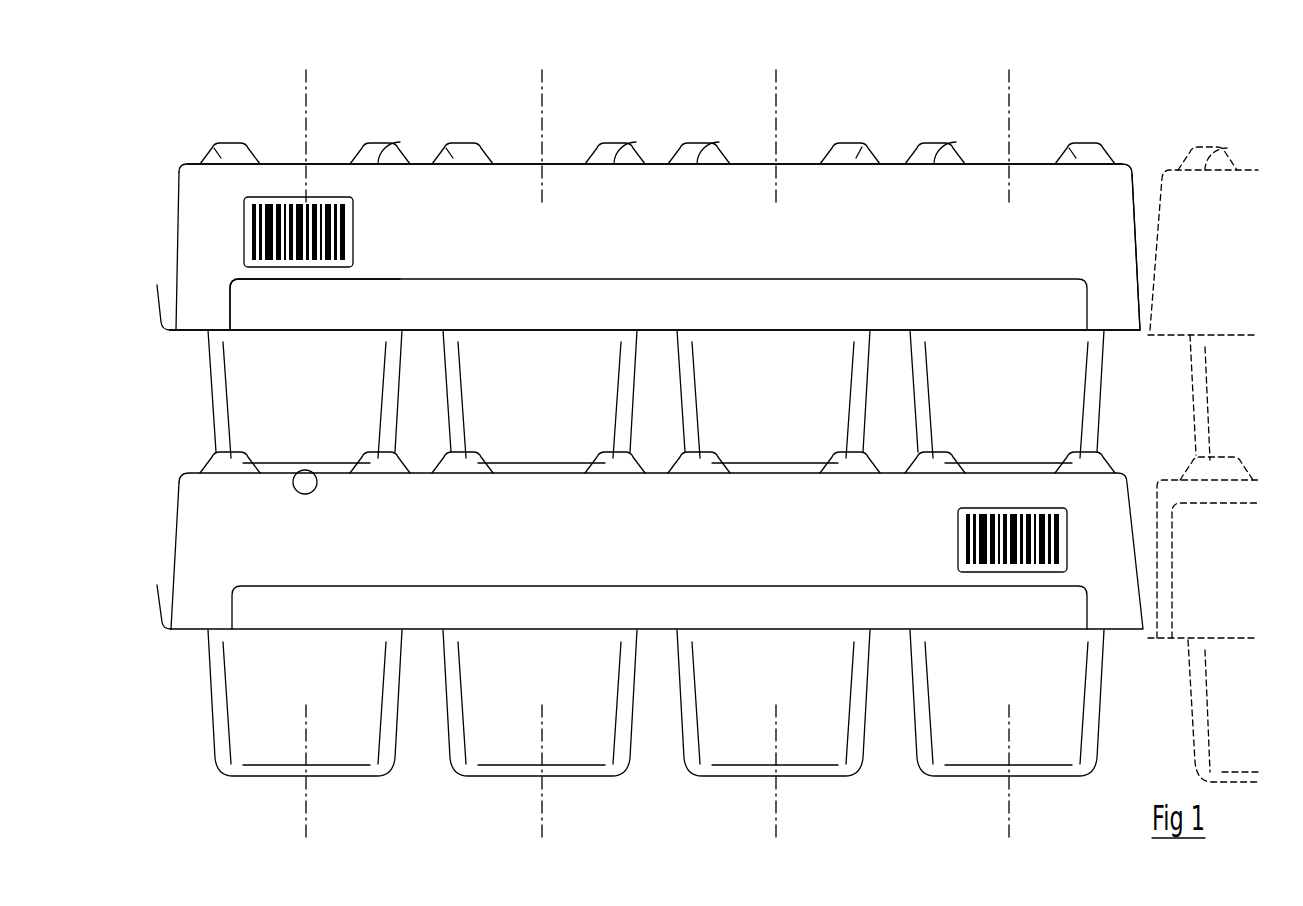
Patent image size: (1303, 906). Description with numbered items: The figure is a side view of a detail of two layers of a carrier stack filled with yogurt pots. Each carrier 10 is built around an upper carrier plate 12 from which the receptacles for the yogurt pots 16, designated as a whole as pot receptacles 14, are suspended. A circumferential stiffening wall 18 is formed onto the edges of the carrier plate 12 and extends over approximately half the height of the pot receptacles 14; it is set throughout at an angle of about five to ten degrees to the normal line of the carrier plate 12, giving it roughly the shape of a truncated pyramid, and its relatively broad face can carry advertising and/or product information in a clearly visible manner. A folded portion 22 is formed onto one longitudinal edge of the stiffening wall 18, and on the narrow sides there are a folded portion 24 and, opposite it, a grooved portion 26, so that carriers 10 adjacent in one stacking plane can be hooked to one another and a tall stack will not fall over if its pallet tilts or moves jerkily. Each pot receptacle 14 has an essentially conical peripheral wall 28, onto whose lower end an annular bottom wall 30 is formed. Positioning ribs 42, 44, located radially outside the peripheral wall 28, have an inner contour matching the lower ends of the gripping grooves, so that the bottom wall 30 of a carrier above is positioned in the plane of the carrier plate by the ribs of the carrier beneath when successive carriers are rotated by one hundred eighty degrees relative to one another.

The carrier 10 is at (1032, 212).
The upper carrier plate 12 is at (793, 163).
The pot receptacles 14 is at (583, 365).
The yogurt pots 16 is at (462, 372).
The circumferential stiffening wall 18 is at (400, 195).
The folded portion 22 is at (370, 297).
The folded portion 24 is at (1140, 330).
The grooved portion 26 is at (160, 300).
The peripheral wall 28 is at (790, 406).
The annular bottom wall 30 is at (315, 470).
The positioning rib 42 is at (705, 147).
The positioning rib 44 is at (848, 144).